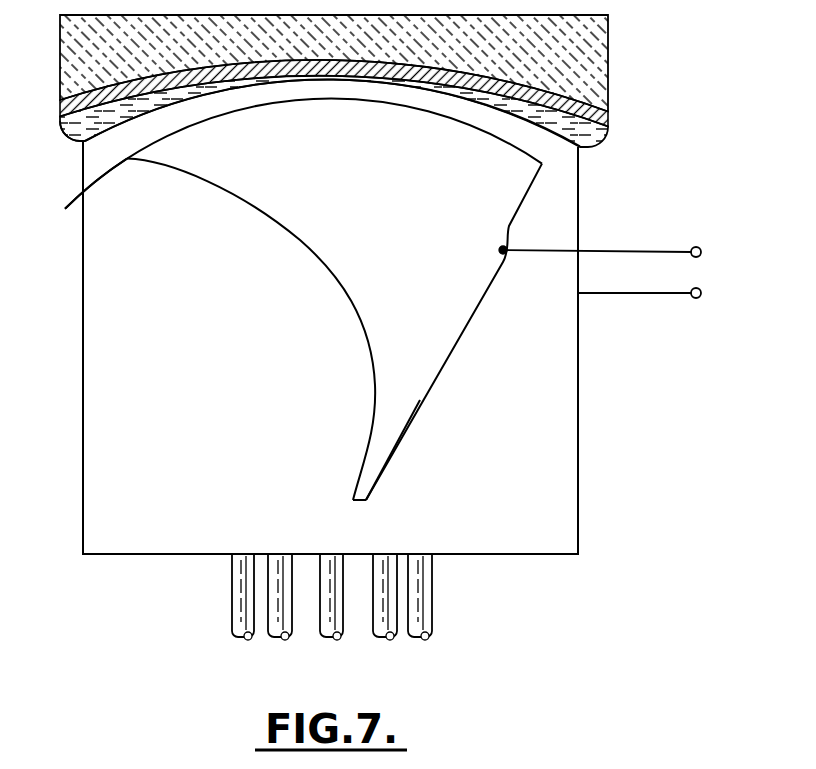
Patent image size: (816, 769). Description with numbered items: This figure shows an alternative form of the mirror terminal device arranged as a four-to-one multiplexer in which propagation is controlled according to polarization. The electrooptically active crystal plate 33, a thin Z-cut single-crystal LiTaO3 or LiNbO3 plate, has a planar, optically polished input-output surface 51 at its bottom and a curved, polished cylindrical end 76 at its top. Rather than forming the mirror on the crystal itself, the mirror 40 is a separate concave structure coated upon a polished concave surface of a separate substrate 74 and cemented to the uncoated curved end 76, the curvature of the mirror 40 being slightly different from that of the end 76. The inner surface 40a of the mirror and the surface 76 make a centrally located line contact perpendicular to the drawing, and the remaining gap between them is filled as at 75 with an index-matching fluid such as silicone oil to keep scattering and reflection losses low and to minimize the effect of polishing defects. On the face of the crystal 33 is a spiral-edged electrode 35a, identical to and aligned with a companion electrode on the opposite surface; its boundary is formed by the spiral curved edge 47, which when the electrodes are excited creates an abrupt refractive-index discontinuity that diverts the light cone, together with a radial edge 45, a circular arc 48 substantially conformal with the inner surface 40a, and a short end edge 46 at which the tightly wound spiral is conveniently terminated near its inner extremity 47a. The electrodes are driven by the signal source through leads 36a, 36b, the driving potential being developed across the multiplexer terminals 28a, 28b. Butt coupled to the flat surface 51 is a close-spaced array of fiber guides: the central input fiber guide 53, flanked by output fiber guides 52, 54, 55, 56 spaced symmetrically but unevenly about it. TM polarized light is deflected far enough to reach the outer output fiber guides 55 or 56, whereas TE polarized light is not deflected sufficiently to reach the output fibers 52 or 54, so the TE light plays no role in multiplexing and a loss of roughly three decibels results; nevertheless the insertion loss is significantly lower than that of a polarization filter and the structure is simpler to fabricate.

The substrate 74 is at (610, 46).
The mirror 40 is at (610, 88).
The inner surface of mirror 40a is at (77, 144).
The fluid-filled gap 75 is at (610, 130).
The cylindrical end of crystal 76 is at (578, 183).
The circular arc edge 48 is at (350, 103).
The tail end of inner arc 47a is at (65, 209).
The spiral curved edge 47 is at (362, 334).
The radial edge 45 is at (458, 337).
The electrode 35a is at (393, 415).
The end edge 46 is at (359, 502).
The lead 36b is at (633, 250).
The lead 36a is at (607, 293).
The multiplexer terminal 28b is at (701, 250).
The multiplexer terminal 28a is at (701, 291).
The electrooptically active crystal plate 33 is at (578, 478).
The planar input-output surface 51 is at (100, 556).
The output fiber guide 55 is at (232, 600).
The output fiber guide 52 is at (279, 640).
The central input fiber guide 53 is at (333, 640).
The output fiber guide 54 is at (387, 640).
The output fiber guide 56 is at (433, 598).